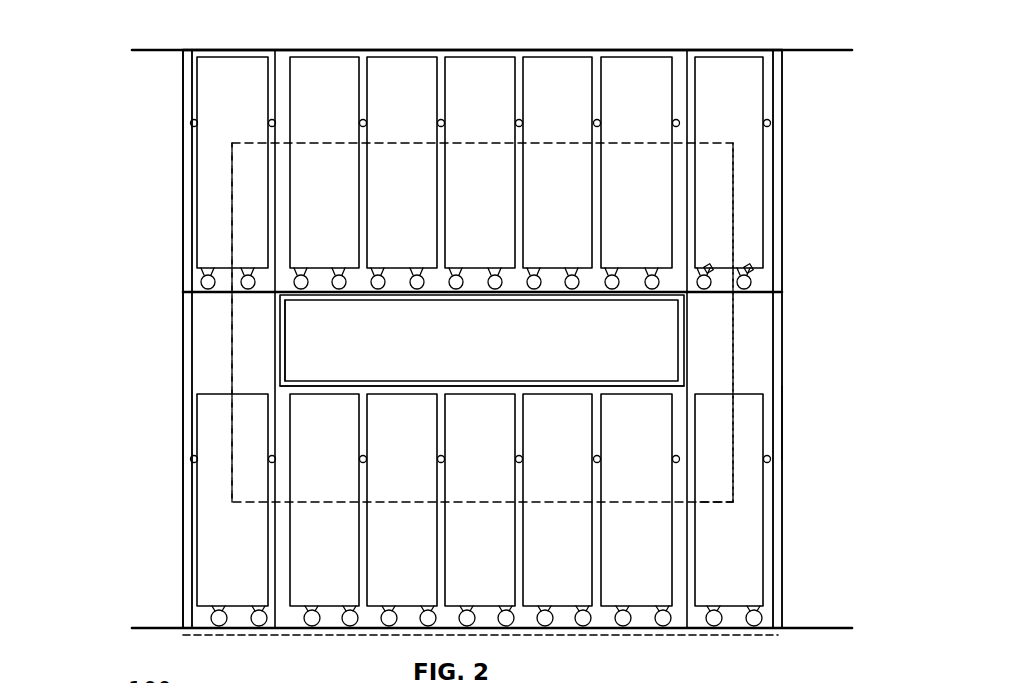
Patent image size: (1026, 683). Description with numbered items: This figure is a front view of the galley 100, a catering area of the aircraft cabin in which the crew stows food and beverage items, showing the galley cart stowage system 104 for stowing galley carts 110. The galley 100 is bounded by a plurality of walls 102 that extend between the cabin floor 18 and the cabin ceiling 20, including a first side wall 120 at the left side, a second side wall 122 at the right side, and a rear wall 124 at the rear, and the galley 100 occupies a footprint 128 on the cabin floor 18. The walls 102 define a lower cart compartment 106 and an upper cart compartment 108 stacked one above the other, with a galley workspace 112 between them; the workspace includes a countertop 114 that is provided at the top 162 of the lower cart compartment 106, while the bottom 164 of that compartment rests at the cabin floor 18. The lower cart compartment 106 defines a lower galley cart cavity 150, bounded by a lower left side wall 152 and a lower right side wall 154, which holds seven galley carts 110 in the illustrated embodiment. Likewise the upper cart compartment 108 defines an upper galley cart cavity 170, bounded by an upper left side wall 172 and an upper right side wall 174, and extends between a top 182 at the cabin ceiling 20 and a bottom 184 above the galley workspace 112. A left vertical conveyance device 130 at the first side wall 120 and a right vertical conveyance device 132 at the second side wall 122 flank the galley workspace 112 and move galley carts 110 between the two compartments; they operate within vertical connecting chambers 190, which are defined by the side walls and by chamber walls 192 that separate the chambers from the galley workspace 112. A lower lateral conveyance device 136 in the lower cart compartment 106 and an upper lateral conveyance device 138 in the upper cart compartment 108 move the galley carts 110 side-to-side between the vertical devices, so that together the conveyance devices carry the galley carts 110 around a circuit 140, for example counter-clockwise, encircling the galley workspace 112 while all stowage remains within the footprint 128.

The cabin floor 18 is at (813, 627).
The cabin ceiling 20 is at (793, 50).
The galley 100 is at (863, 252).
The walls 102 is at (183, 187).
The galley cart stowage system 104 is at (141, 107).
The lower cart compartment 106 is at (185, 573).
The upper cart compartment 108 is at (181, 226).
The galley carts 110 is at (305, 585).
The galley workspace 112 is at (660, 323).
The countertop 114 is at (680, 335).
The first side wall 120 is at (188, 452).
The second side wall 122 is at (783, 425).
The rear wall 124 is at (315, 350).
The footprint 128 is at (743, 646).
The left vertical conveyance device 130 is at (182, 625).
The right vertical conveyance device 132 is at (765, 282).
The lower lateral conveyance device 136 is at (785, 460).
The upper lateral conveyance device 138 is at (785, 122).
The circuit 140 is at (745, 425).
The lower galley cart cavity 150 is at (778, 538).
The lower left side wall 152 is at (188, 525).
The lower right side wall 154 is at (776, 513).
The top 162 is at (474, 388).
The bottom 164 is at (563, 627).
The upper galley cart cavity 170 is at (776, 197).
The upper left side wall 172 is at (183, 153).
The upper right side wall 174 is at (776, 160).
The top 182 is at (555, 50).
The bottom 184 is at (440, 280).
The vertical connecting chambers 190 is at (204, 333).
The chamber walls 192 is at (190, 345).